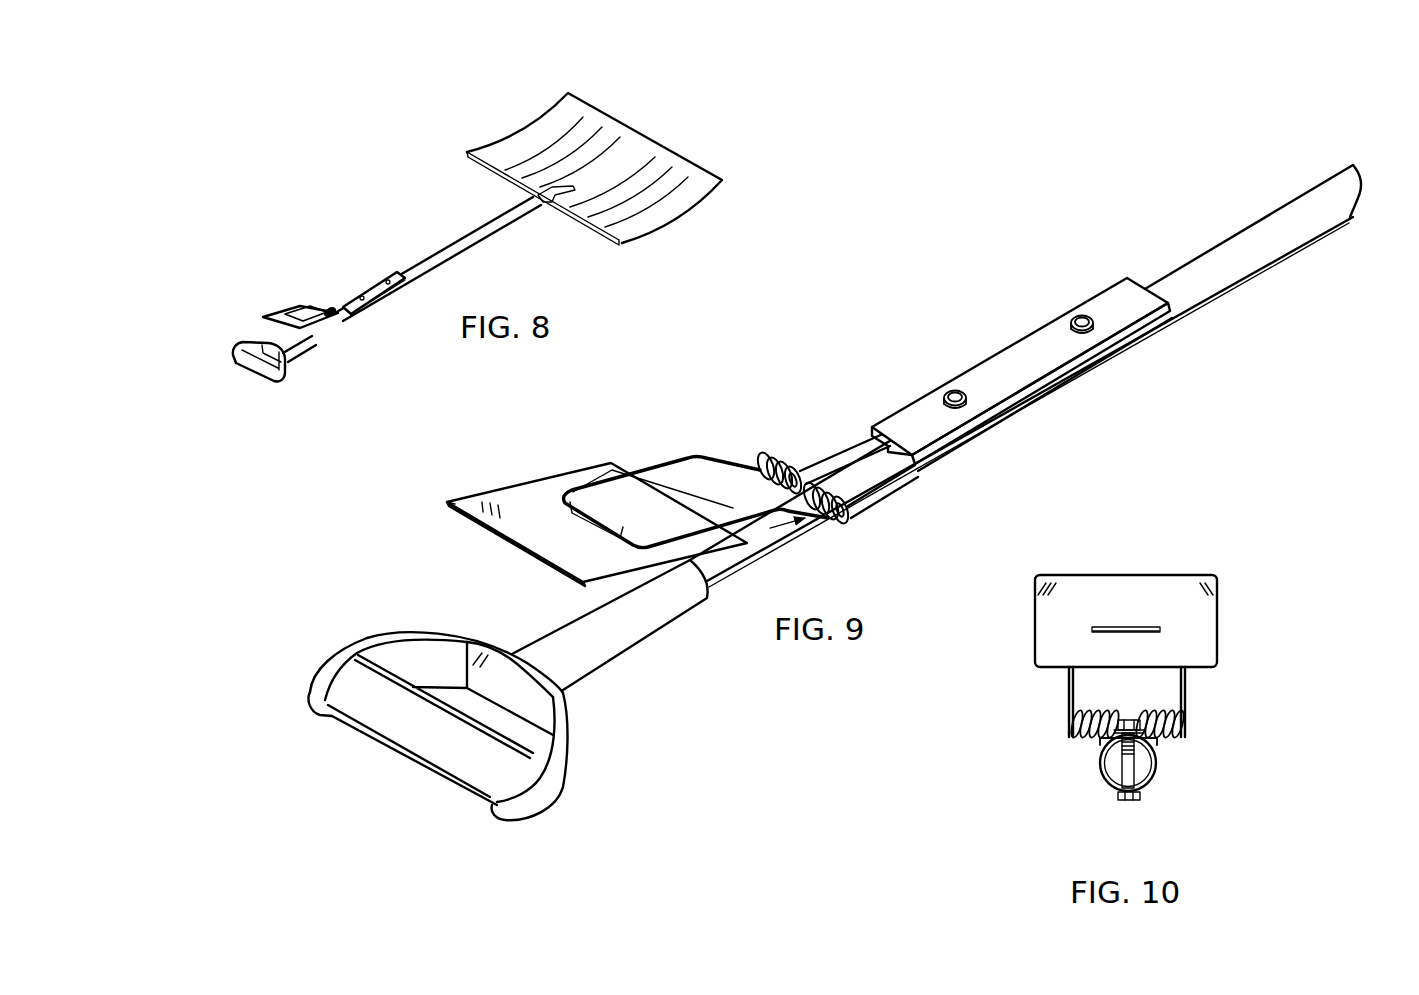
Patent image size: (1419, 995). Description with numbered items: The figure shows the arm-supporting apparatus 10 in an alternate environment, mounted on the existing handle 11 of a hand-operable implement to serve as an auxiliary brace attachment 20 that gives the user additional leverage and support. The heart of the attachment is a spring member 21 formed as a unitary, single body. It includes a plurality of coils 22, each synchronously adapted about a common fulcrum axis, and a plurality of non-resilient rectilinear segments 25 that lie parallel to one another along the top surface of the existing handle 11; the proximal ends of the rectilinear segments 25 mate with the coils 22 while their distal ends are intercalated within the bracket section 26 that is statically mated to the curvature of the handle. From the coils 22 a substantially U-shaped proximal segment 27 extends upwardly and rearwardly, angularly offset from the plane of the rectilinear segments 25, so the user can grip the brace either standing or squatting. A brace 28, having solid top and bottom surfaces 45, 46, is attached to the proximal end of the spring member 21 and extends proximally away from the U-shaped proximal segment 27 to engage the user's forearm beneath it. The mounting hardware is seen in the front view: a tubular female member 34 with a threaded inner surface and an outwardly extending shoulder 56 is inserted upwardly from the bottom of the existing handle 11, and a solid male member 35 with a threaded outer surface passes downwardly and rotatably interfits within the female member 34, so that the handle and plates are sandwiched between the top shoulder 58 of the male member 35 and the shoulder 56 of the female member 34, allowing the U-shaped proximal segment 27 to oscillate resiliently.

In FIG. 8, the arm-supporting apparatus 10 is at (252, 128).
In FIG. 9, the arm-supporting apparatus 10 is at (633, 637).
In FIG. 8, the existing handle 11 is at (470, 247).
In FIG. 9, the existing handle 11 is at (750, 565).
In FIG. 8, the auxiliary brace attachment 20 is at (327, 183).
In FIG. 9, the auxiliary brace attachment 20 is at (962, 198).
In FIG. 8, the spring member 21 is at (333, 300).
In FIG. 9, the spring member 21 is at (781, 440).
In FIG. 10, the spring member 21 is at (1121, 770).
In FIG. 9, the coils 22 is at (767, 455).
In FIG. 10, the coils 22 is at (1072, 740).
In FIG. 9, the rectilinear segments 25 is at (832, 436).
In FIG. 8, the bracket section 26 is at (370, 280).
In FIG. 9, the bracket section 26 is at (1025, 329).
In FIG. 8, the U-shaped proximal segment 27 is at (295, 307).
In FIG. 9, the U-shaped proximal segment 27 is at (668, 456).
In FIG. 10, the U-shaped proximal segment 27 is at (1200, 690).
In FIG. 8, the brace 28 is at (268, 307).
In FIG. 9, the brace 28 is at (523, 480).
In FIG. 10, the brace 28 is at (1171, 569).
In FIG. 10, the tubular female member 34 is at (1128, 805).
In FIG. 9, the solid male member 35 is at (945, 378).
In FIG. 10, the solid male member 35 is at (1118, 708).
In FIG. 9, the top surface 45 is at (472, 507).
In FIG. 10, the bottom surface 46 is at (1218, 620).
In FIG. 10, the shoulder 56 is at (1140, 796).
In FIG. 9, the top shoulder 58 is at (957, 390).
In FIG. 10, the top shoulder 58 is at (1128, 718).